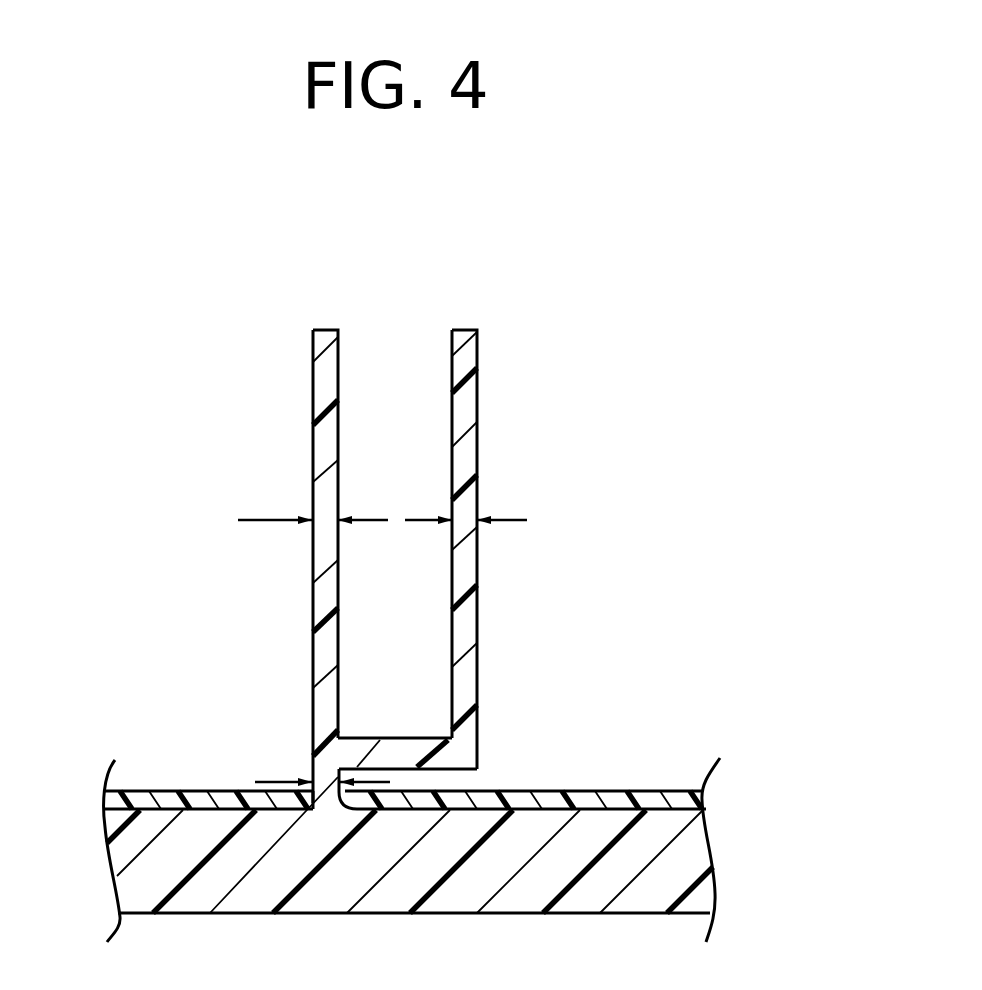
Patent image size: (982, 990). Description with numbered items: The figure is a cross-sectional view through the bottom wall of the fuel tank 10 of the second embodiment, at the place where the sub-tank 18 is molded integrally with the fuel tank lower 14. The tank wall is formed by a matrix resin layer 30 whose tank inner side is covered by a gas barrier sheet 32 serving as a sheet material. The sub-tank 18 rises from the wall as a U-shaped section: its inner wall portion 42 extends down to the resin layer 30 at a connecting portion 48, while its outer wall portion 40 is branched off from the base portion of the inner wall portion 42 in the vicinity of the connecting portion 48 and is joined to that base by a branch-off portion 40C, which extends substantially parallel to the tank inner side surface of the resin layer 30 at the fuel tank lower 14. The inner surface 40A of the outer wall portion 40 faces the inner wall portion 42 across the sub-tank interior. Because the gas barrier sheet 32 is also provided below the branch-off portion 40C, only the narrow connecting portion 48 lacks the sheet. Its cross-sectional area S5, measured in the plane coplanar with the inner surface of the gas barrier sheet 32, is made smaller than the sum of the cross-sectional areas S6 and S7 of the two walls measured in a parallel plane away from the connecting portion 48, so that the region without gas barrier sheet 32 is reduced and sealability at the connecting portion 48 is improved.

The fuel tank 10 is at (762, 497).
The fuel tank lower 14 is at (725, 850).
The sub-tank 18 is at (402, 358).
The matrix resin layer 30 is at (515, 890).
The gas barrier sheet 32 is at (160, 792).
The outer wall portion 40 is at (478, 455).
The inner surface of leg 40 40A is at (478, 574).
The branch-off portion 40C is at (400, 737).
The inner wall portion 42 is at (312, 424).
The connecting portion 48 is at (322, 806).
The cross-sectional area of the connecting portion S5 is at (323, 785).
The cross-sectional area of the inner wall portion S6 is at (320, 517).
The cross-sectional area of the outer wall portion S7 is at (465, 518).